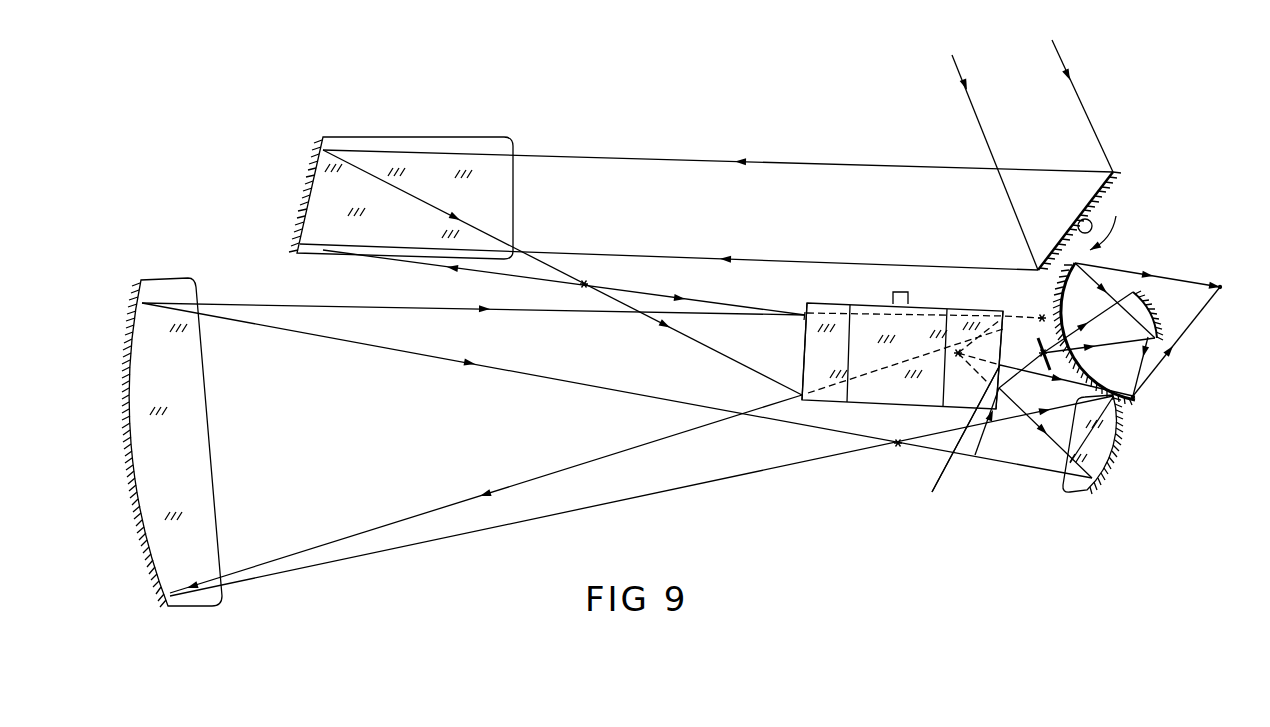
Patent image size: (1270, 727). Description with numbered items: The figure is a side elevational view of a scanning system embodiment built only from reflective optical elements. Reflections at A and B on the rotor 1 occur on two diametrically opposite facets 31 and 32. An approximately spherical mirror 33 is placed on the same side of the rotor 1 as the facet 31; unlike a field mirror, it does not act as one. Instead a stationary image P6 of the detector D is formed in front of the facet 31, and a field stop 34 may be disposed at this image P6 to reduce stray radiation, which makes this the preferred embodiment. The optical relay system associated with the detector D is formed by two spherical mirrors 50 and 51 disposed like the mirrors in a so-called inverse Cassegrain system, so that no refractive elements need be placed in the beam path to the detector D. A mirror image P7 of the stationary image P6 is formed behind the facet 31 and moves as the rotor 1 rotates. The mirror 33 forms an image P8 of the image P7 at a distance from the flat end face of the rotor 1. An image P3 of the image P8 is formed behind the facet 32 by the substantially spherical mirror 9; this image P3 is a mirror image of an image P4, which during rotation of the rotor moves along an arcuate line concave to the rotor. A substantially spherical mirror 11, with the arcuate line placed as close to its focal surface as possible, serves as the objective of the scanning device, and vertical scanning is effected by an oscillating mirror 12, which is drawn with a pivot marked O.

The substantially spherical mirror 9 is at (172, 608).
The substantially spherical mirror 11 is at (325, 147).
The oscillating mirror 12 is at (1117, 182).
The pivot axis of scanning mirror O is at (1085, 226).
The rotor 1 is at (930, 308).
The facet 31 is at (980, 403).
The facet 32 is at (798, 380).
The approximately spherical mirror 33 is at (1090, 482).
The field stop 34 is at (1112, 282).
The spherical mirror 50 is at (1136, 397).
The spherical mirror 51 is at (1158, 332).
The reflection A is at (956, 441).
The reflection B is at (805, 352).
The detector D is at (1241, 295).
The image P3 is at (1040, 317).
The image P4 is at (585, 282).
The stationary image P6 is at (1033, 371).
The mirror image P7 is at (958, 358).
The image P8 is at (898, 446).